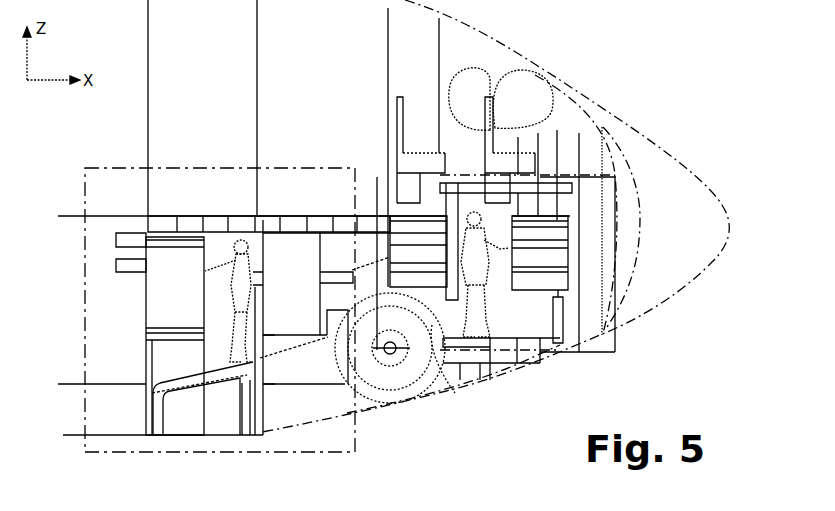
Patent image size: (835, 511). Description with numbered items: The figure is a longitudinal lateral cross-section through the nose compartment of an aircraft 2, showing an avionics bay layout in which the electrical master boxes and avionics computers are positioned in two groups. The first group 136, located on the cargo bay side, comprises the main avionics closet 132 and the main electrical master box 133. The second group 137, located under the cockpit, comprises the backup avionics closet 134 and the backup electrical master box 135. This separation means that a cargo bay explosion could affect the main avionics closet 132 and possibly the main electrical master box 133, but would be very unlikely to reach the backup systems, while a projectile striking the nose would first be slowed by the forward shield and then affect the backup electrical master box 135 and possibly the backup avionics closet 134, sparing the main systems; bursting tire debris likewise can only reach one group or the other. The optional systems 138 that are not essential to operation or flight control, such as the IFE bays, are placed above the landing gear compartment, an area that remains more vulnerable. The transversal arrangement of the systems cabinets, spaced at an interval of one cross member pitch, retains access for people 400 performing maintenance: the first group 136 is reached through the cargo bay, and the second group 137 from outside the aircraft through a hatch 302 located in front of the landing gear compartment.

The aircraft floor panels 2 is at (203, 224).
The main avionics closet 132 is at (173, 280).
The main electrical master box 133 is at (295, 258).
The backup avionics closet 134 is at (533, 308).
The backup electrical master box 135 is at (545, 230).
The first group 136 is at (137, 452).
The second group 137 is at (593, 348).
The optional systems 138 is at (413, 230).
The hatch 302 is at (527, 365).
The people 400 is at (470, 210).